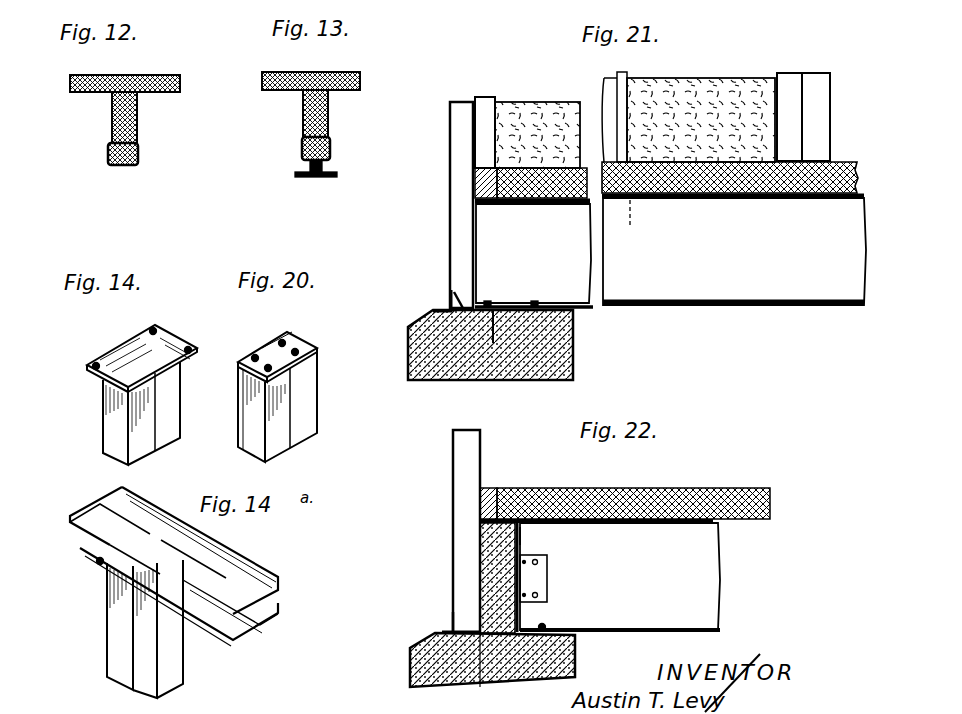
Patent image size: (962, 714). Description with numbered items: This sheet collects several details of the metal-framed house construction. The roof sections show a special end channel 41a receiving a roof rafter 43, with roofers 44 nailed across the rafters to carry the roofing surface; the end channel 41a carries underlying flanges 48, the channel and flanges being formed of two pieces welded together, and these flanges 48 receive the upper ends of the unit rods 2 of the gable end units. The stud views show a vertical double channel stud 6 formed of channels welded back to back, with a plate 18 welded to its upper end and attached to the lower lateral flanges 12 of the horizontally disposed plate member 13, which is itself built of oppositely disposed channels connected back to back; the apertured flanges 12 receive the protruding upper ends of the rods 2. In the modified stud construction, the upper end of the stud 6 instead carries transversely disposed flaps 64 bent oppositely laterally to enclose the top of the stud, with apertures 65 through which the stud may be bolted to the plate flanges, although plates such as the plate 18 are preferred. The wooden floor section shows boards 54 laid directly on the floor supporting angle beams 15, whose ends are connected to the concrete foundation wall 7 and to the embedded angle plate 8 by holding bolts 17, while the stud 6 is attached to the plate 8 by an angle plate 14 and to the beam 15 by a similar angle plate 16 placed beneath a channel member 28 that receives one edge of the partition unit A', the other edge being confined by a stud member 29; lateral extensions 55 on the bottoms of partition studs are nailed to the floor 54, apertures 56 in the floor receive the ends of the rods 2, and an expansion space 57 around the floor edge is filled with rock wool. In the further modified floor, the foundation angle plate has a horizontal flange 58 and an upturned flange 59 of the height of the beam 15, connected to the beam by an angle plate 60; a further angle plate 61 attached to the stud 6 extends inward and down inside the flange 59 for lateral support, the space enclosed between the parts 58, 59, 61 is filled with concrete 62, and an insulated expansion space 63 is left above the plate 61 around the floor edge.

In FIG. 12, the roofers 44 is at (122, 78).
In FIG. 13, the roofers 44 is at (310, 76).
In FIG. 12, the roof rafters 43 is at (112, 114).
In FIG. 13, the roof rafters 43 is at (328, 104).
In FIG. 12, the special end channel 41a is at (108, 155).
In FIG. 13, the special end channel 41a is at (302, 150).
In FIG. 13, the flanges 48 is at (297, 176).
In FIG. 14, the plate 18 is at (124, 349).
In FIG. 14A, the plate 18 is at (98, 566).
In FIG. 14, the stud 6 is at (168, 420).
In FIG. 20, the stud 6 is at (298, 418).
In FIG. 14A, the stud 6 is at (168, 660).
In FIG. 21, the stud 6 is at (468, 228).
In FIG. 22, the stud 6 is at (473, 526).
In FIG. 20, the flaps 64 is at (300, 342).
In FIG. 20, the apertures 65 is at (282, 340).
In FIG. 14A, the lateral flanges 12 is at (73, 548).
In FIG. 14A, the plate member 13 is at (266, 592).
In FIG. 21, the channel member 28 is at (484, 150).
In FIG. 21, the angle plate 16 is at (476, 196).
In FIG. 21, the expansion space 57 is at (495, 205).
In FIG. 21, the floor supporting angle beam 15 is at (625, 298).
In FIG. 22, the floor supporting angle beam 15 is at (713, 598).
In FIG. 21, the holding bolts 17 is at (533, 300).
In FIG. 22, the holding bolts 17 is at (545, 623).
In FIG. 21, the concrete foundation wall 7 is at (408, 370).
In FIG. 22, the concrete foundation wall 7 is at (411, 670).
In FIG. 21, the angle plate 14 is at (445, 308).
In FIG. 22, the angle plate 14 is at (450, 628).
In FIG. 21, the angle plate 8 is at (456, 293).
In FIG. 21, the unit rods 2 is at (625, 78).
In FIG. 21, the partition unit A' is at (701, 107).
In FIG. 21, the stud member 29 is at (812, 82).
In FIG. 21, the boards (wooden floor) 54 is at (717, 186).
In FIG. 22, the boards (wooden floor) 54 is at (700, 488).
In FIG. 21, the lateral extensions 55 is at (813, 160).
In FIG. 21, the apertures 56 is at (637, 224).
In FIG. 22, the expansion space 63 is at (492, 490).
In FIG. 22, the angle plate 61 is at (500, 512).
In FIG. 22, the concrete 62 is at (481, 563).
In FIG. 22, the upturned flange 59 is at (522, 543).
In FIG. 22, the angle plate 60 is at (543, 574).
In FIG. 22, the flange 58 is at (490, 678).